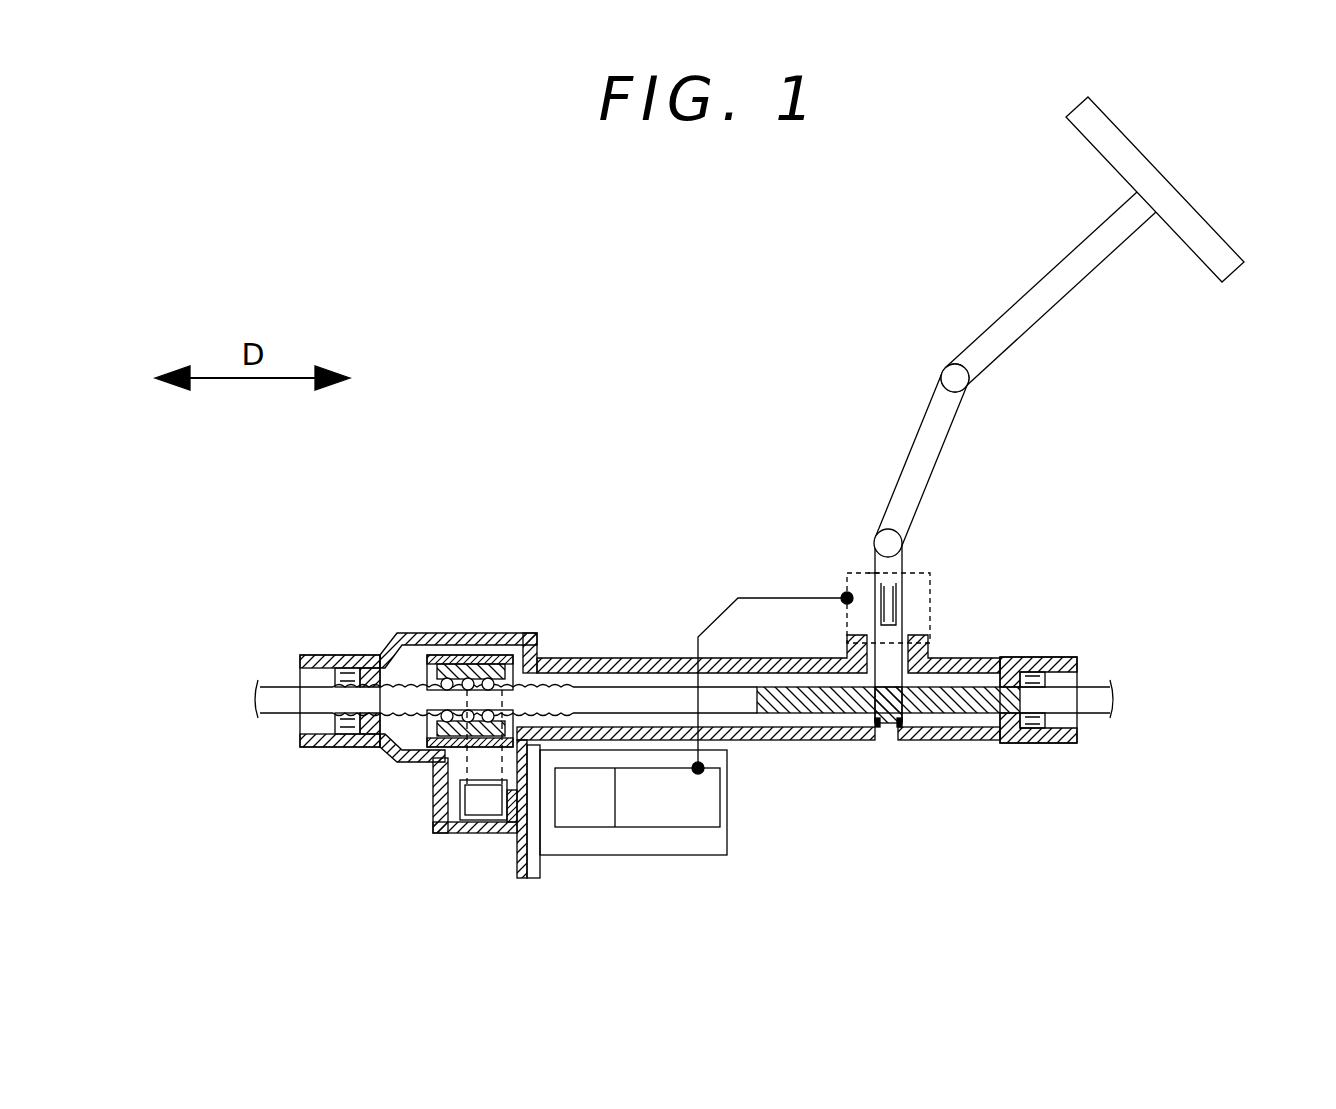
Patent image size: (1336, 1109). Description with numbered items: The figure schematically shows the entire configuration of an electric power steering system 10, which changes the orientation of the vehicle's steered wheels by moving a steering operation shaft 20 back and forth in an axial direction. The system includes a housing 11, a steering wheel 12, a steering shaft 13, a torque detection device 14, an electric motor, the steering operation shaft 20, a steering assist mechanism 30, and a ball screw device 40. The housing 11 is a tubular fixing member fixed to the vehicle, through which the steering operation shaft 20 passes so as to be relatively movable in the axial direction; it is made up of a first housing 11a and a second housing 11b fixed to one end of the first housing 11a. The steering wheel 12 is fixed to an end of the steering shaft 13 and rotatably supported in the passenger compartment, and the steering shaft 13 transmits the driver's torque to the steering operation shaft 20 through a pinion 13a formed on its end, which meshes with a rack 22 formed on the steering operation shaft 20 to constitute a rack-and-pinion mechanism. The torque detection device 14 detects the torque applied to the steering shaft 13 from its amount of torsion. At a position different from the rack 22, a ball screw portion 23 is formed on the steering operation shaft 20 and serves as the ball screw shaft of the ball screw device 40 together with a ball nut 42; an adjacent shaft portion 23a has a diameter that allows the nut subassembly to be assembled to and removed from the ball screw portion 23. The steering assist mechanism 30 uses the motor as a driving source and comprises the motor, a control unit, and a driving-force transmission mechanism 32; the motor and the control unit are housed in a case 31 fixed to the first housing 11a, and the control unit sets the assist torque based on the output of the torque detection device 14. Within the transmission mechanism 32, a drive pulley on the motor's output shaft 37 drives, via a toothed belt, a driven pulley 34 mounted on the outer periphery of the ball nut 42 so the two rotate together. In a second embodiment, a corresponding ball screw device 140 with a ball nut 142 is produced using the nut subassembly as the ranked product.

The electric power steering system 10 is at (585, 438).
The housing 11 is at (795, 666).
The first housing 11a is at (647, 657).
The second housing 11b is at (540, 632).
The steering wheel 12 is at (1130, 137).
The steering shaft 13 is at (872, 565).
The pinion 13a is at (890, 708).
The torque detection device 14 is at (932, 600).
The steering operation shaft 20 is at (606, 660).
The rack 22 is at (843, 700).
The ball screw portion 23 is at (545, 700).
The shaft portion 23a is at (290, 685).
The steering assist mechanism 30 is at (467, 822).
The case 31 is at (652, 857).
The driving-force transmission mechanism 32 is at (440, 772).
The driven pulley 34 is at (483, 637).
The output shaft 37 is at (509, 822).
The ball screw device 40 is at (422, 635).
The ball screw device 140 is at (422, 635).
The ball nut 42 is at (455, 635).
The ball nut 142 is at (452, 635).